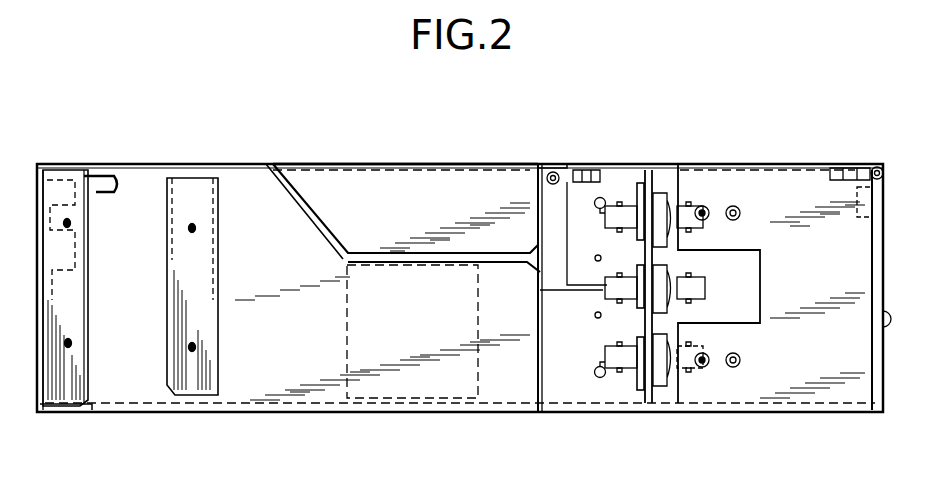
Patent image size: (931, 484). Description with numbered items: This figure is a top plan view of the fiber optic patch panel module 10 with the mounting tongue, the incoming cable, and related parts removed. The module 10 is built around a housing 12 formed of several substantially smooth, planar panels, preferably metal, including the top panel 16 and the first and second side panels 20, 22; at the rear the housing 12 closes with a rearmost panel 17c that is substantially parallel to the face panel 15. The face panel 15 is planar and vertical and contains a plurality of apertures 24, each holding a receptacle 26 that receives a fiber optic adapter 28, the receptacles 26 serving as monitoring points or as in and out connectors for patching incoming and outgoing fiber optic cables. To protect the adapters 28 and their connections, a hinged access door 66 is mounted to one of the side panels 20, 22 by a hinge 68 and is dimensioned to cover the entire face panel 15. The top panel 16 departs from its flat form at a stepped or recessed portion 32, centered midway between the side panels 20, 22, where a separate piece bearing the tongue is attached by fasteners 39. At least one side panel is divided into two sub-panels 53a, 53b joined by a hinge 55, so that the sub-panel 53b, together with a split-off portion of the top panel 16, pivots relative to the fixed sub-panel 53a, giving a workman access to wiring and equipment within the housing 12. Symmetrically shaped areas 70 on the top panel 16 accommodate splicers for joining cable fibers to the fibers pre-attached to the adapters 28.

The module 10 is at (722, 88).
The housing 12 is at (320, 162).
The face panel 15 is at (677, 412).
The top panel 16 is at (237, 375).
The rearmost panel 17c is at (62, 304).
The first side panel 20 is at (500, 162).
The second side panel 22 is at (428, 413).
The apertures 24 is at (670, 208).
The receptacles 26 is at (658, 165).
The fiber optic adapters 28 is at (703, 230).
The recessed portion 32 is at (677, 322).
The fasteners 39 is at (720, 208).
The sub-panel 53a is at (765, 163).
The sub-panel 53b is at (388, 163).
The hinge 55 is at (553, 170).
The hinged access door 66 is at (883, 318).
The hinge 68 is at (877, 165).
The areas 70 is at (347, 403).